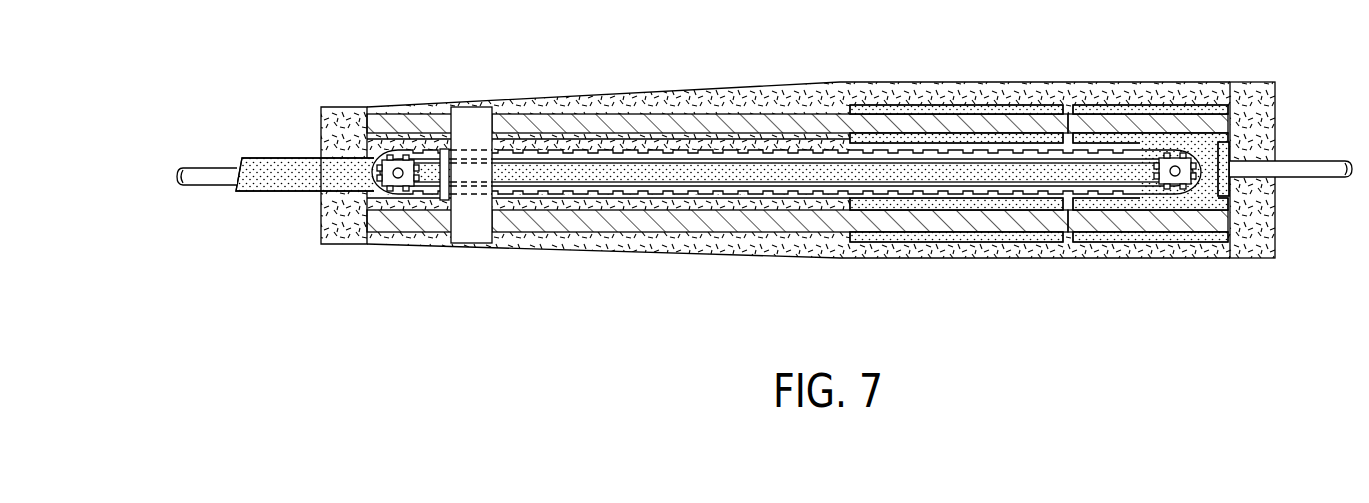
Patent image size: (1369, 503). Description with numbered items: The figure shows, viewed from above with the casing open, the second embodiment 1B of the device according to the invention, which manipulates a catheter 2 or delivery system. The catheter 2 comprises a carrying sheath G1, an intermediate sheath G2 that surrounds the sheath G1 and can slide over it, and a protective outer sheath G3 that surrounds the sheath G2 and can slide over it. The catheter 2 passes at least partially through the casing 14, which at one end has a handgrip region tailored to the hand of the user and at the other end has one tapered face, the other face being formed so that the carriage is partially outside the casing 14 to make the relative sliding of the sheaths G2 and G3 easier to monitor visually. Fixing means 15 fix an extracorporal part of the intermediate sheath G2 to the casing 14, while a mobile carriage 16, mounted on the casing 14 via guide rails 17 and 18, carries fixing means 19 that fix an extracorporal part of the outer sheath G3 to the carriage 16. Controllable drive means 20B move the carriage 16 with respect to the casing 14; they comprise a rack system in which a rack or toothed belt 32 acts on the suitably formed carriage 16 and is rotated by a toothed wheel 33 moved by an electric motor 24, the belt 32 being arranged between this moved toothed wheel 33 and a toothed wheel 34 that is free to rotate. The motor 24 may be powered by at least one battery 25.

The second embodiment of the device 1B is at (573, 84).
The catheter 2 is at (278, 212).
The carrying sheath G1 is at (1342, 178).
The intermediate sheath G2 is at (233, 161).
The protective outer sheath G3 is at (278, 160).
The casing 14 is at (1276, 100).
The fixing means 15 is at (1242, 194).
The mobile carriage 16 is at (473, 244).
The guide rail 17 is at (653, 113).
The guide rail 18 is at (655, 233).
The fixing means 19 is at (434, 211).
The drive means 20B is at (1209, 266).
The electric motor 24 is at (1170, 236).
The battery 25 is at (1047, 240).
The rack or toothed belt 32 is at (753, 196).
The toothed wheel 33 is at (1180, 138).
The toothed wheel 34 is at (392, 142).